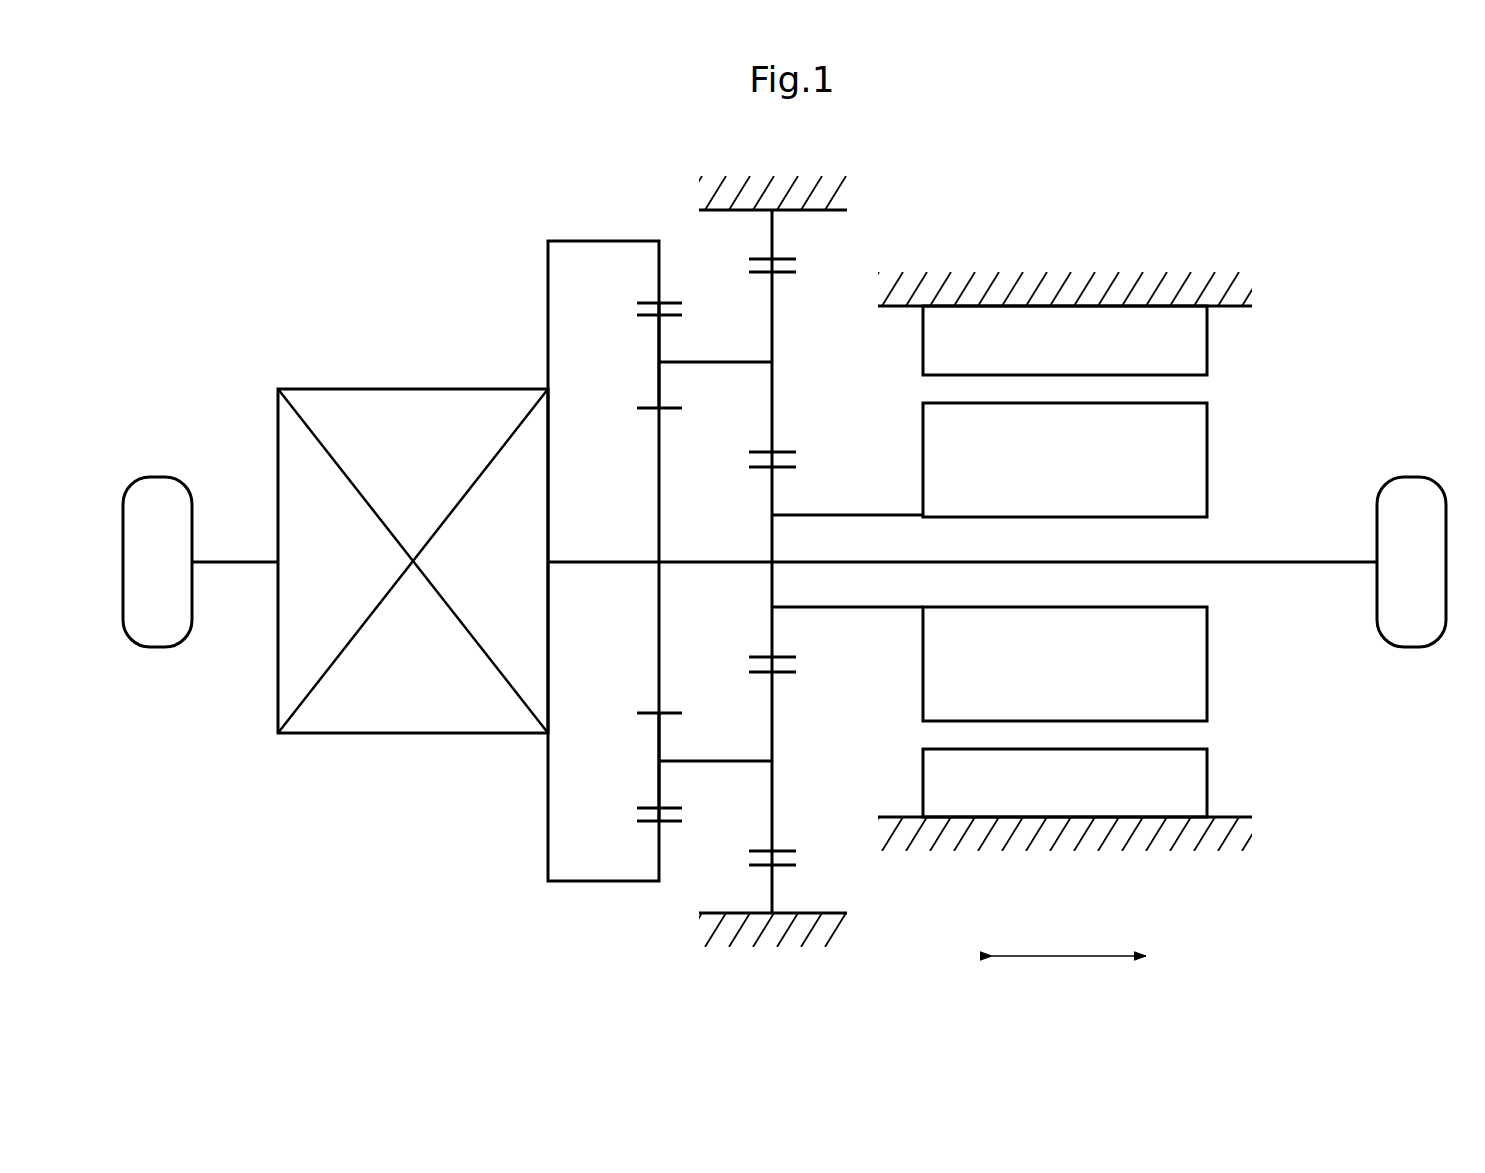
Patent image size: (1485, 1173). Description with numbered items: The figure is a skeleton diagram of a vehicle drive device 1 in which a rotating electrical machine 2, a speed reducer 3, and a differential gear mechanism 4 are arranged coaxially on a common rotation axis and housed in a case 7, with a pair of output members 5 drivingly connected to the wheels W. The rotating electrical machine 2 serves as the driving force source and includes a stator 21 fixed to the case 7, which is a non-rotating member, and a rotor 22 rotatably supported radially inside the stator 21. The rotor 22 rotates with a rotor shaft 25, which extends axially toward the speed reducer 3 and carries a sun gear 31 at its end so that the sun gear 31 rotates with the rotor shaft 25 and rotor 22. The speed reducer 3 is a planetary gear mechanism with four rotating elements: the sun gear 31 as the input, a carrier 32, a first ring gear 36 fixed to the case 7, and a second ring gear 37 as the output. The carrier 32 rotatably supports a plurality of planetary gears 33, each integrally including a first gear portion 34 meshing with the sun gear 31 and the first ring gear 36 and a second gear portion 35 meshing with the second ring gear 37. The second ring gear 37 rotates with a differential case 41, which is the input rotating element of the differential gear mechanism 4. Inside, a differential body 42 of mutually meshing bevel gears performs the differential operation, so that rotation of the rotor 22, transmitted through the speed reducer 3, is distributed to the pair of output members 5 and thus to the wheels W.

The vehicle drive device 1 is at (232, 148).
The rotating electrical machine 2 is at (1282, 298).
The speed reducer 3 is at (672, 203).
The differential gear mechanism 4 is at (423, 318).
The output members 5 is at (226, 563).
The case 7 is at (828, 180).
The stator 21 is at (1197, 358).
The rotor 22 is at (1195, 470).
The rotor shaft 25 is at (843, 608).
The sun gear 31 is at (783, 468).
The carrier 32 is at (718, 361).
The planetary gears 33 is at (623, 378).
The first gear portion 34 is at (787, 274).
The second gear portion 35 is at (650, 317).
The first ring gear 36 is at (787, 261).
The second ring gear 37 is at (650, 302).
The differential case 41 is at (547, 290).
The differential body 42 is at (348, 388).
The wheels W is at (150, 648).